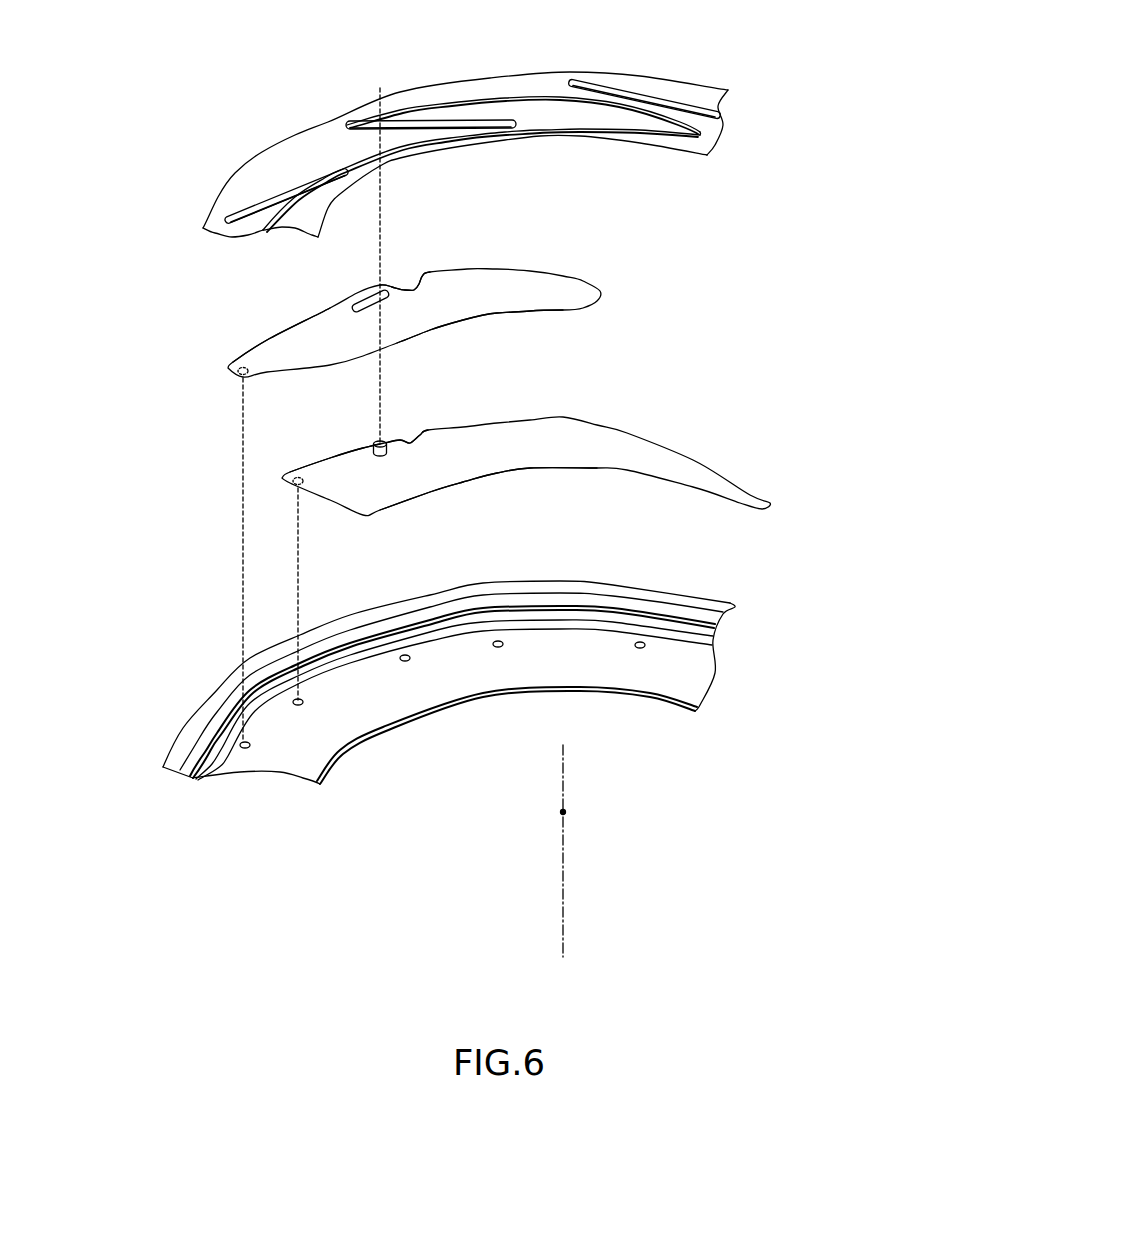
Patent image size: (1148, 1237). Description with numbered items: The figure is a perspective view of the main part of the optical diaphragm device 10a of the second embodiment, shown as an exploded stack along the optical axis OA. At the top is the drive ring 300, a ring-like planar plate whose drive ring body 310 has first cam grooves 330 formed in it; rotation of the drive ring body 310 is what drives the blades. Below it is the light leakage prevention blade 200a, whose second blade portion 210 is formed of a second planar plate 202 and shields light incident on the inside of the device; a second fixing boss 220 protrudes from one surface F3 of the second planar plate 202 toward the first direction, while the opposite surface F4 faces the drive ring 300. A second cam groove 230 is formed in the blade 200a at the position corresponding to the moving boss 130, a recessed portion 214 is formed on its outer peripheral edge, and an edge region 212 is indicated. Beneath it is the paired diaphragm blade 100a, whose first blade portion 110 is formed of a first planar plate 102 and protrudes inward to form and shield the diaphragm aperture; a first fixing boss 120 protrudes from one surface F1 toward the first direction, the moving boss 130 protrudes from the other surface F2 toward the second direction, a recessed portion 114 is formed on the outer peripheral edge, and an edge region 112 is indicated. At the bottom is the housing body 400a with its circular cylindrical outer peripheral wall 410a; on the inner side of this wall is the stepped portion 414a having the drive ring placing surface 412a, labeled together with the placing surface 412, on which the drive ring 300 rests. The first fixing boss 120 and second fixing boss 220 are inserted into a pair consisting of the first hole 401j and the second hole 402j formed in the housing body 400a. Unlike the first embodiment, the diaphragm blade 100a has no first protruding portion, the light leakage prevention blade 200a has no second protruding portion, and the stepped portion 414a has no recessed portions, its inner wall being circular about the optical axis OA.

The optical diaphragm device 10a is at (772, 20).
The drive ring 300 is at (737, 121).
The drive ring body 310 is at (510, 80).
The first cam groove 330 is at (412, 104).
The light leakage prevention blade 200a is at (632, 295).
The second planar plate 202 is at (466, 260).
The second blade portion 210 is at (483, 328).
The left edge of second blade 212 is at (262, 343).
The recessed portion 214 is at (413, 278).
The second cam groove 230 is at (368, 302).
The second fixing boss 220 is at (241, 378).
The diaphragm blade 100a is at (726, 447).
The first planar plate 102 is at (571, 414).
The first blade portion 110 is at (514, 478).
The left edge of first blade 112 is at (327, 459).
The recessed portion 114 is at (408, 430).
The moving boss 130 is at (373, 445).
The first fixing boss 120 is at (297, 490).
The housing body 400a is at (730, 584).
The outer peripheral wall 410a is at (597, 588).
The drive ring placing surface 412 is at (540, 620).
The drive ring placing surface 412a is at (718, 636).
The stepped portion 414a is at (706, 652).
The first hole 401j is at (298, 710).
The second hole 402j is at (248, 752).
The one surface of the first planar plate F1 is at (667, 482).
The other surface of the first planar plate F2 is at (667, 460).
The one surface of the second planar plate F3 is at (563, 313).
The fourth surface F4 is at (562, 290).
The optical axis OA is at (565, 867).